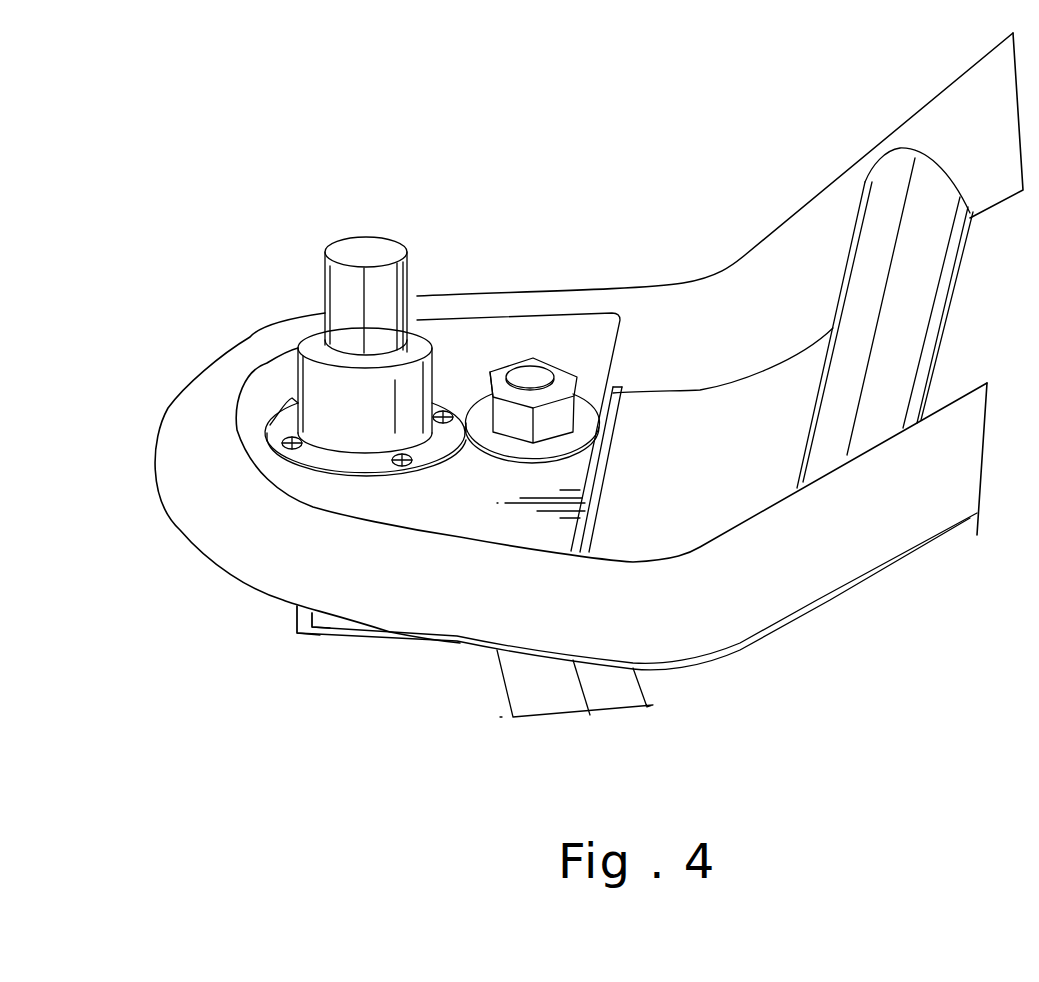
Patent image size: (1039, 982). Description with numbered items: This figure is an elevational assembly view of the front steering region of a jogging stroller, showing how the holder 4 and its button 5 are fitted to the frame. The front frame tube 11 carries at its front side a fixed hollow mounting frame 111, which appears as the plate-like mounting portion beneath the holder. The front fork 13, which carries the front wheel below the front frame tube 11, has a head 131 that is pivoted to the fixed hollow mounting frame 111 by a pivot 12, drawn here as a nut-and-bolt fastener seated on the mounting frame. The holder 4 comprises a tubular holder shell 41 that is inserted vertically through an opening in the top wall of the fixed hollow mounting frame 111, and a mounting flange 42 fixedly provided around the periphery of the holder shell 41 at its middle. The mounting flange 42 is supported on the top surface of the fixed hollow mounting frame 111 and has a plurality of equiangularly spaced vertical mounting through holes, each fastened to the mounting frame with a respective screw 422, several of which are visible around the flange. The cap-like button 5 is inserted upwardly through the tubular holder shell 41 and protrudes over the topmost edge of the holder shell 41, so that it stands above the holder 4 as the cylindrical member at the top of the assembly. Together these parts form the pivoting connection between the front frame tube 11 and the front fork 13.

The front frame tube 11 is at (865, 160).
The fixed hollow mounting frame 111 is at (593, 353).
The pivot 12 is at (530, 377).
The front fork 13 is at (500, 683).
The head 131 is at (292, 622).
The holder 4 is at (440, 363).
The tubular holder shell 41 is at (312, 385).
The mounting flange 42 is at (327, 470).
The screw 422 is at (413, 462).
The cap-like button 5 is at (428, 222).